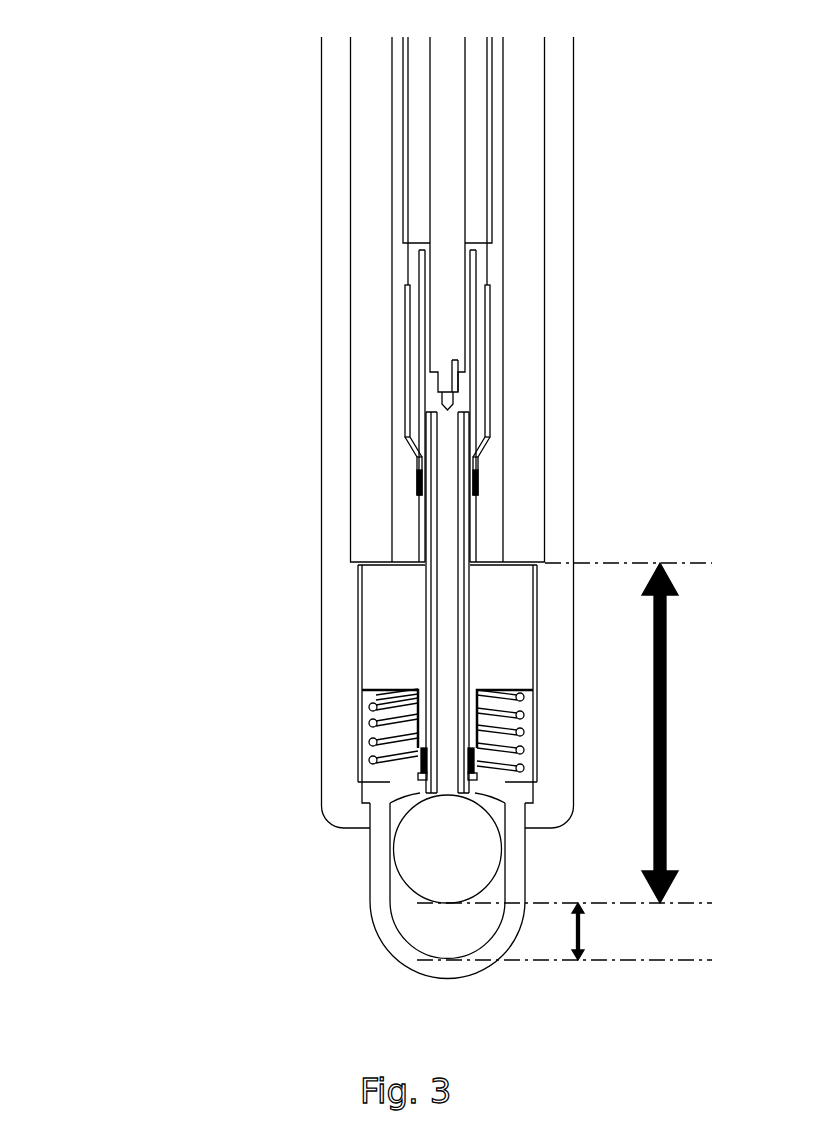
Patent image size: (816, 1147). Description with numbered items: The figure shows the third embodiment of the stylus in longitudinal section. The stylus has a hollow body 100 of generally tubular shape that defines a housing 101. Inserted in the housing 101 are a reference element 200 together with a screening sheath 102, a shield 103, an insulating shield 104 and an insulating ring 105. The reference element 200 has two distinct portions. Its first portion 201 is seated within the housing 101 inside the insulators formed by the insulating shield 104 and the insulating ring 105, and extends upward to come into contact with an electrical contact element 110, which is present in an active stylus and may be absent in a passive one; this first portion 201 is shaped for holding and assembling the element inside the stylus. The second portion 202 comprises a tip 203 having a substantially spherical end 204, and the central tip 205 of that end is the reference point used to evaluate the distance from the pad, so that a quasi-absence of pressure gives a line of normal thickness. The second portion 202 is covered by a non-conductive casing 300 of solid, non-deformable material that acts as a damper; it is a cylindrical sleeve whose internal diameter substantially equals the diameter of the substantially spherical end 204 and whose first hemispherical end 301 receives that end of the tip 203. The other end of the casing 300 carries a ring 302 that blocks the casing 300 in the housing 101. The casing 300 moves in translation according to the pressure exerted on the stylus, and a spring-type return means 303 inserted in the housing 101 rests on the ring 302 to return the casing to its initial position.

The hollow body 100 is at (332, 237).
The housing 101 is at (457, 58).
The screening sheath 102 is at (469, 549).
The shield 103 is at (383, 587).
The insulating shield 104 is at (421, 700).
The insulating ring 105 is at (362, 802).
The electrical contact element 110 is at (447, 398).
The reference element 200 is at (437, 572).
The first portion 201 is at (447, 437).
The second portion 202 is at (448, 795).
The tip 203 is at (482, 833).
The substantially spherical end 204 is at (493, 885).
The central tip 205 is at (448, 847).
The non-conductive casing 300 is at (370, 860).
The first hemispherical end 301 is at (392, 952).
The ring 302 is at (422, 789).
The spring 303 is at (373, 722).